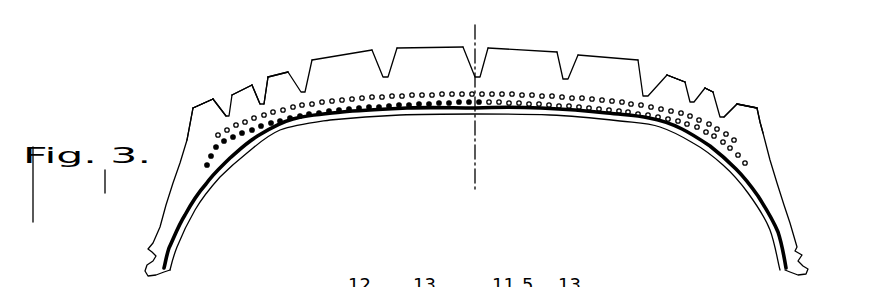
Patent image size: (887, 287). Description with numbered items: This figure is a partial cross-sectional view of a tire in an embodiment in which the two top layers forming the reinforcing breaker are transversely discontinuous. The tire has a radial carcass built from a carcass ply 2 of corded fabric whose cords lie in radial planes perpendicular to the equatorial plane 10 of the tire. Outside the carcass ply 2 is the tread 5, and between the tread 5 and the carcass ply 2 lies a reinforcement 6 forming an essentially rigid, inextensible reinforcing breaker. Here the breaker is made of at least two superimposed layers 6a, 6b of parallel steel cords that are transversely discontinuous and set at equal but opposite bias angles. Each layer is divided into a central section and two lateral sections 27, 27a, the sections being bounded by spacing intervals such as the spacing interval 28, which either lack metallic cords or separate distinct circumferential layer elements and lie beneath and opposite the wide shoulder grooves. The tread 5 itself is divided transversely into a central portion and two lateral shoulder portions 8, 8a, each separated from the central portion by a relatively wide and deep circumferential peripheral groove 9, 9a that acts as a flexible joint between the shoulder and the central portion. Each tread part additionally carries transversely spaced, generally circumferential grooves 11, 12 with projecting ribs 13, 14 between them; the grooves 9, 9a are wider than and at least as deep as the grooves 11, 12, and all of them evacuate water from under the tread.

The carcass ply 2 is at (185, 213).
The tread 5 is at (493, 76).
The reinforcement 6 is at (476, 129).
The layer 6a is at (455, 104).
The layer 6b is at (537, 98).
The lateral shoulder portion 8 is at (233, 88).
The lateral shoulder portion 8a is at (717, 88).
The circumferential peripheral groove 9 is at (297, 76).
The circumferential peripheral groove 9a is at (652, 73).
The equatorial plane 10 is at (476, 168).
The groove 11 is at (383, 63).
The groove 12 is at (222, 107).
The projecting rib 13 is at (340, 53).
The projecting rib 14 is at (202, 103).
The lateral section 27 is at (226, 125).
The lateral section 27a is at (743, 140).
The spacing interval 28 is at (310, 108).